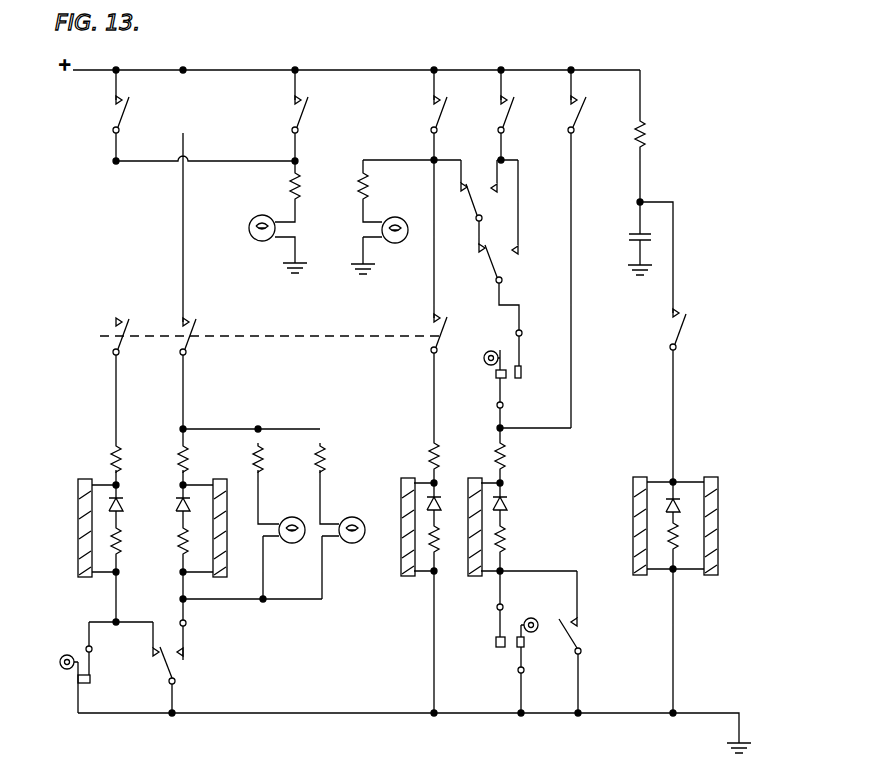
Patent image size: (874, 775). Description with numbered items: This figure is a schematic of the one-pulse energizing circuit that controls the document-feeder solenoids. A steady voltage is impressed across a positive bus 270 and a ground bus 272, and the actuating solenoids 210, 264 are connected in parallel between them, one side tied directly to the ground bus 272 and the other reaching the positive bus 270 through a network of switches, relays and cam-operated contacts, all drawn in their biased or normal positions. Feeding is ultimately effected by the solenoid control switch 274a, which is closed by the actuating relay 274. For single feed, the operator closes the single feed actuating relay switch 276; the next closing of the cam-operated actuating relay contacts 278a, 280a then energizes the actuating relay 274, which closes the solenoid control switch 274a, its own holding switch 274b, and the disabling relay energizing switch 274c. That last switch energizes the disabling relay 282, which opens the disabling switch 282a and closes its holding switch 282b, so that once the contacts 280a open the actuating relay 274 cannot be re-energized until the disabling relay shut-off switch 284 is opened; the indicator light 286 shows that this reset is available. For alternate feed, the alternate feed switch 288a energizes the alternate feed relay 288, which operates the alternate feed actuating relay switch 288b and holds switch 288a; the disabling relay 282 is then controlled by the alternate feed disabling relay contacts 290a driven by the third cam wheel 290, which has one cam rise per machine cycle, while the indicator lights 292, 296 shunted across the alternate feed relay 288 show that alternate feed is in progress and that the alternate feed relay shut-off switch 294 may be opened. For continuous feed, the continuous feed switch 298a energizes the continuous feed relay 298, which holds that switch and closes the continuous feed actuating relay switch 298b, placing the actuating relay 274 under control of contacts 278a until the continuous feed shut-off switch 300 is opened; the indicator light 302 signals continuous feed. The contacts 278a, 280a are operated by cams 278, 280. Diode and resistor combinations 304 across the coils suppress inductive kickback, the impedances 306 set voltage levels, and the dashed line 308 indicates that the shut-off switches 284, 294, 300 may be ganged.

The positive bus 270 is at (620, 70).
The ground bus 272 is at (729, 713).
The disabling relay holding switch 282b is at (118, 113).
The disabling relay energizing switch 274c is at (304, 113).
The continuous feed switch 298a is at (440, 112).
The disabling switch 282a is at (505, 115).
The actuating relay holding switch 274b is at (584, 109).
The impedances 306 is at (300, 184).
The indicator light 286 is at (254, 216).
The indicator light 302 is at (401, 241).
The alternate feed actuating relay switch 288b is at (474, 200).
The single feed actuating relay switch 276 is at (490, 268).
The solenoid control switch 274a is at (684, 322).
The disabling relay shut-off switch 284 is at (118, 331).
The alternate feed relay shut-off switch 294 is at (192, 330).
The dashed line 308 is at (327, 336).
The continuous feed shut-off switch 300 is at (431, 327).
The cam wheel 278 is at (483, 359).
The actuating relay contacts 278a is at (512, 384).
The disabling relay 282 is at (78, 542).
The diode and resistor combination 304 is at (126, 550).
The alternate feed relay 288 is at (222, 564).
The indicator light 292 is at (292, 544).
The indicator light 296 is at (360, 506).
The continuous feed relay 298 is at (401, 498).
The actuating relay 274 is at (476, 577).
The actuating solenoid 210 is at (633, 500).
The actuating solenoid 264 is at (717, 496).
The third cam wheel 290 is at (60, 663).
The alternate feed disabling relay contacts 290a is at (85, 683).
The alternate feed switch 288a is at (173, 668).
The actuating relay contacts 280a is at (514, 635).
The cam wheel 280 is at (536, 633).
The continuous feed actuating relay switch 298b is at (575, 639).